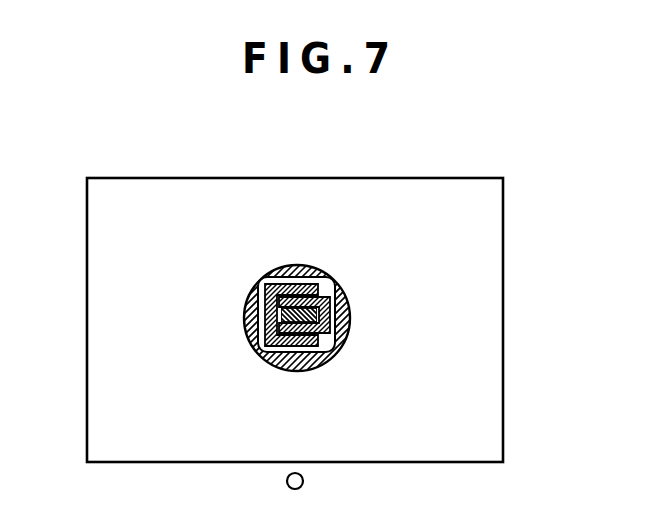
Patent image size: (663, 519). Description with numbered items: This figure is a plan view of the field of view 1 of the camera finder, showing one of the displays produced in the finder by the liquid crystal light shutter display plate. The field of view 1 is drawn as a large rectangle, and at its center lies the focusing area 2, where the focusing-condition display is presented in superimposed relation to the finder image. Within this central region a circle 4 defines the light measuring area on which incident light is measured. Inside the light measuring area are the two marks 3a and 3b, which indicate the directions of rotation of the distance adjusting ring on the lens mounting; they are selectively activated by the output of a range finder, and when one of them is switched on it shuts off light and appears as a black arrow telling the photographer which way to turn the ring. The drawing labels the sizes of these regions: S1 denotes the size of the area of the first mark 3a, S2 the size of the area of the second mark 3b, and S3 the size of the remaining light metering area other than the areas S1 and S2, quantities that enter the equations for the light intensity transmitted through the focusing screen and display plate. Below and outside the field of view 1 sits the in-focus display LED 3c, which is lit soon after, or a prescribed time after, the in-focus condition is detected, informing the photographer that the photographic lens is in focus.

The field of view of the finder 1 is at (466, 177).
The focusing area 2 is at (246, 323).
The first mark 3a is at (273, 283).
The second mark 3b is at (323, 284).
The in-focus display LED 3c is at (304, 480).
The circle defining a light measuring area 4 is at (348, 291).
The size of the area of the first mark S1 is at (269, 312).
The size of the area of the second mark S2 is at (332, 316).
The size of the light metering area other than the mark areas S3 is at (298, 281).